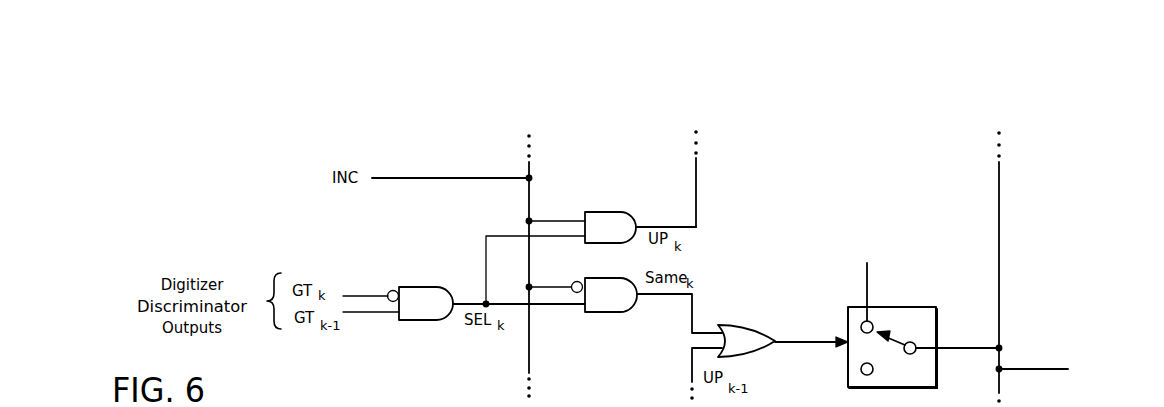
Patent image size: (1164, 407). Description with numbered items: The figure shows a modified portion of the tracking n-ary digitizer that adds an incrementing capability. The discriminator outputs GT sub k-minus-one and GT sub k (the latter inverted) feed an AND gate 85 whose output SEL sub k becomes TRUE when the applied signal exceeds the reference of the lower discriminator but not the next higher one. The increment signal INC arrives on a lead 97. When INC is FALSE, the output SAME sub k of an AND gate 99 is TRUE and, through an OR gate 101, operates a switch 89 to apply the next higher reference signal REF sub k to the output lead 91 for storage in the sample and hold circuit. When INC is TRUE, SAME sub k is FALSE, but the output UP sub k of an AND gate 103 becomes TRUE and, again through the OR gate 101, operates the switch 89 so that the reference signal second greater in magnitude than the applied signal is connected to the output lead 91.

The AND gate 85 is at (417, 287).
The lead 97 is at (529, 185).
The AND gate 103 is at (620, 212).
The AND gate 99 is at (598, 312).
The OR gate 101 is at (742, 325).
The switch 89 is at (893, 307).
The output lead 91 is at (999, 273).